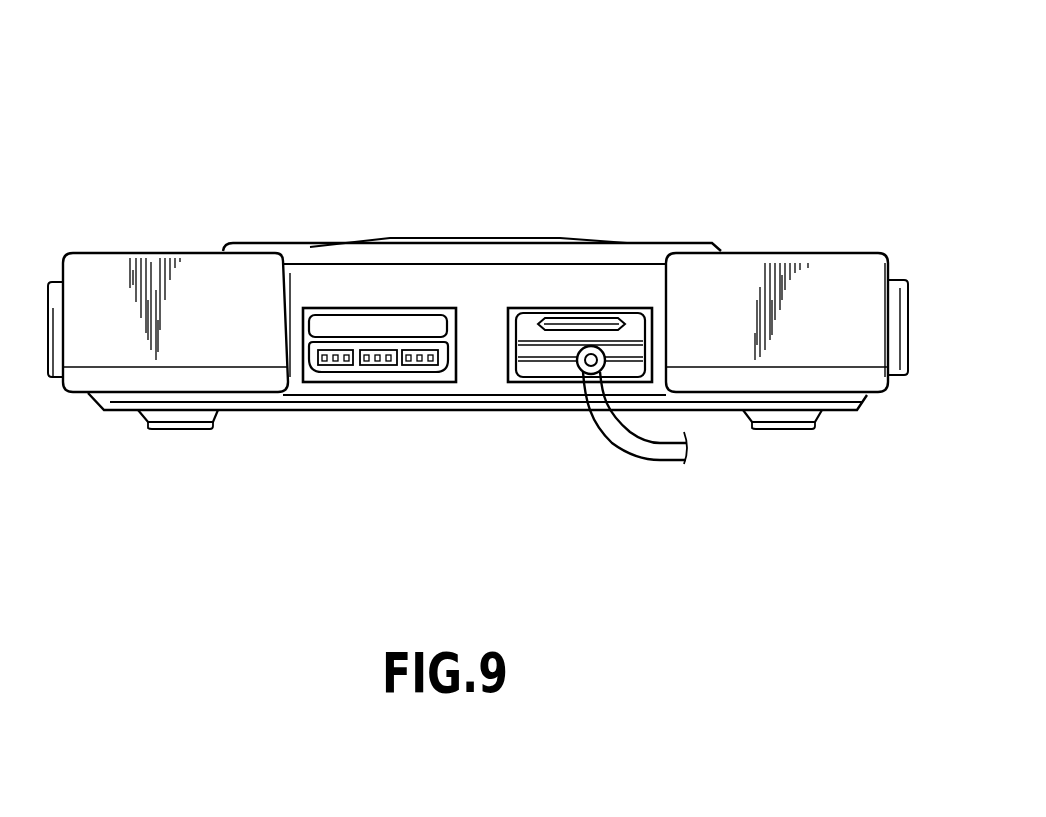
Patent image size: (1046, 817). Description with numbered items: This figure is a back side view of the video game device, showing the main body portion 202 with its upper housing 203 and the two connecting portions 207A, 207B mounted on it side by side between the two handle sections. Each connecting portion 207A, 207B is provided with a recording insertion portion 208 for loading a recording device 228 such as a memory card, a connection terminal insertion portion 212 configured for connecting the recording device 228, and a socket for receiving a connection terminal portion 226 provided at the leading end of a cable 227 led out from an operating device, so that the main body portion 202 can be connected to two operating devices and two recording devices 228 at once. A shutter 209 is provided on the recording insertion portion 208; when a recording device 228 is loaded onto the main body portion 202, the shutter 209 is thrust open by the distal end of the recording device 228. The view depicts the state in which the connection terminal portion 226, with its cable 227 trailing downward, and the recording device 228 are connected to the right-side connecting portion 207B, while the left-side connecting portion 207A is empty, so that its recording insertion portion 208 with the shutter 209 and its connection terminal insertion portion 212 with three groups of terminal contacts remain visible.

The main body portion 202 is at (478, 298).
The upper housing 203 is at (472, 198).
The connecting portion 207A is at (361, 337).
The connecting portion 207B is at (582, 373).
The recording insertion portion 208 is at (383, 320).
The shutter 209 is at (402, 253).
The connection terminal insertion portion 212 is at (378, 425).
The connection terminal portion 226 is at (572, 441).
The cable 227 is at (662, 474).
The recording device 228 is at (603, 250).